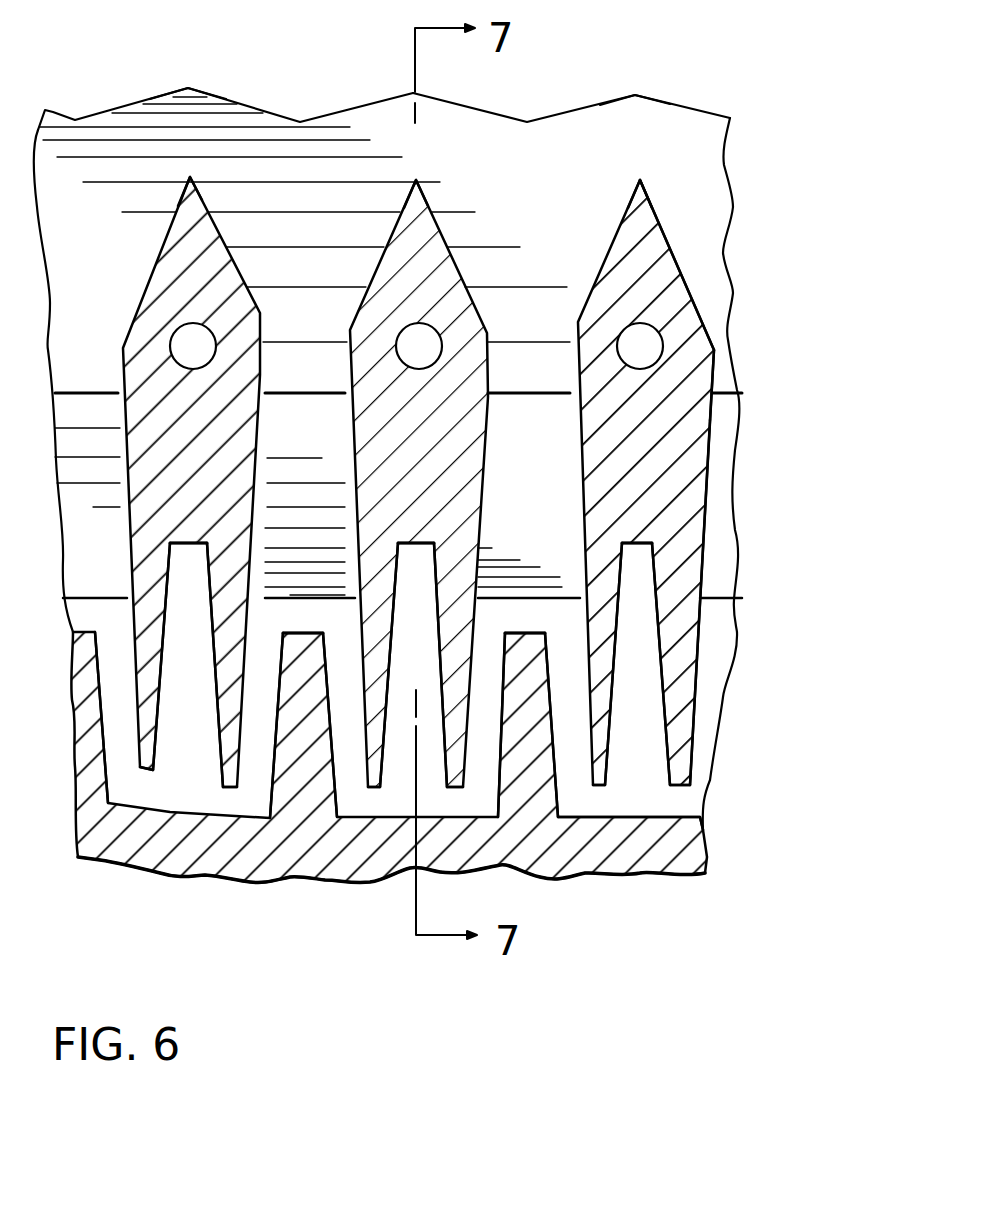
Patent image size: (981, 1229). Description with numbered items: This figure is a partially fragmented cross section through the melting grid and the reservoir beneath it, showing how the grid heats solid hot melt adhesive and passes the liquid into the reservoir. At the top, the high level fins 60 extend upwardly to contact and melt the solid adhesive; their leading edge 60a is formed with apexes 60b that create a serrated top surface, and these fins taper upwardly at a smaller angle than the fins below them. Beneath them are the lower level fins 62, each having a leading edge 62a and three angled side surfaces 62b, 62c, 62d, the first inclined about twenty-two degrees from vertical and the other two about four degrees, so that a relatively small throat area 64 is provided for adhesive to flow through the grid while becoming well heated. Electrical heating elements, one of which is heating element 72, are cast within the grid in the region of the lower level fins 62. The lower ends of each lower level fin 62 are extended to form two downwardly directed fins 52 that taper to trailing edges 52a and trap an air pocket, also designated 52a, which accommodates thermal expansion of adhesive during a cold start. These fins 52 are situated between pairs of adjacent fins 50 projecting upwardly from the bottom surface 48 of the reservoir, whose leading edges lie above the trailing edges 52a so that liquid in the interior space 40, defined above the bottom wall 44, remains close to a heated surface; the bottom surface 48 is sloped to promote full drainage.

The interior space 40 is at (720, 670).
The bottom wall 44 is at (217, 867).
The bottom surface 48 is at (703, 797).
The fins 50 is at (272, 678).
The fins 52 is at (215, 738).
The trailing edges 52a is at (414, 553).
The fins 60 is at (590, 96).
The leading edge 60a is at (557, 116).
The apexes 60b is at (188, 88).
The lower level fins 62 is at (165, 240).
The leading edge 62a is at (418, 180).
The angled side surface 62b is at (667, 233).
The angled side surface 62c is at (716, 355).
The angled side surface 62d is at (709, 492).
The throat area 64 is at (293, 400).
The heating element 72 is at (633, 348).